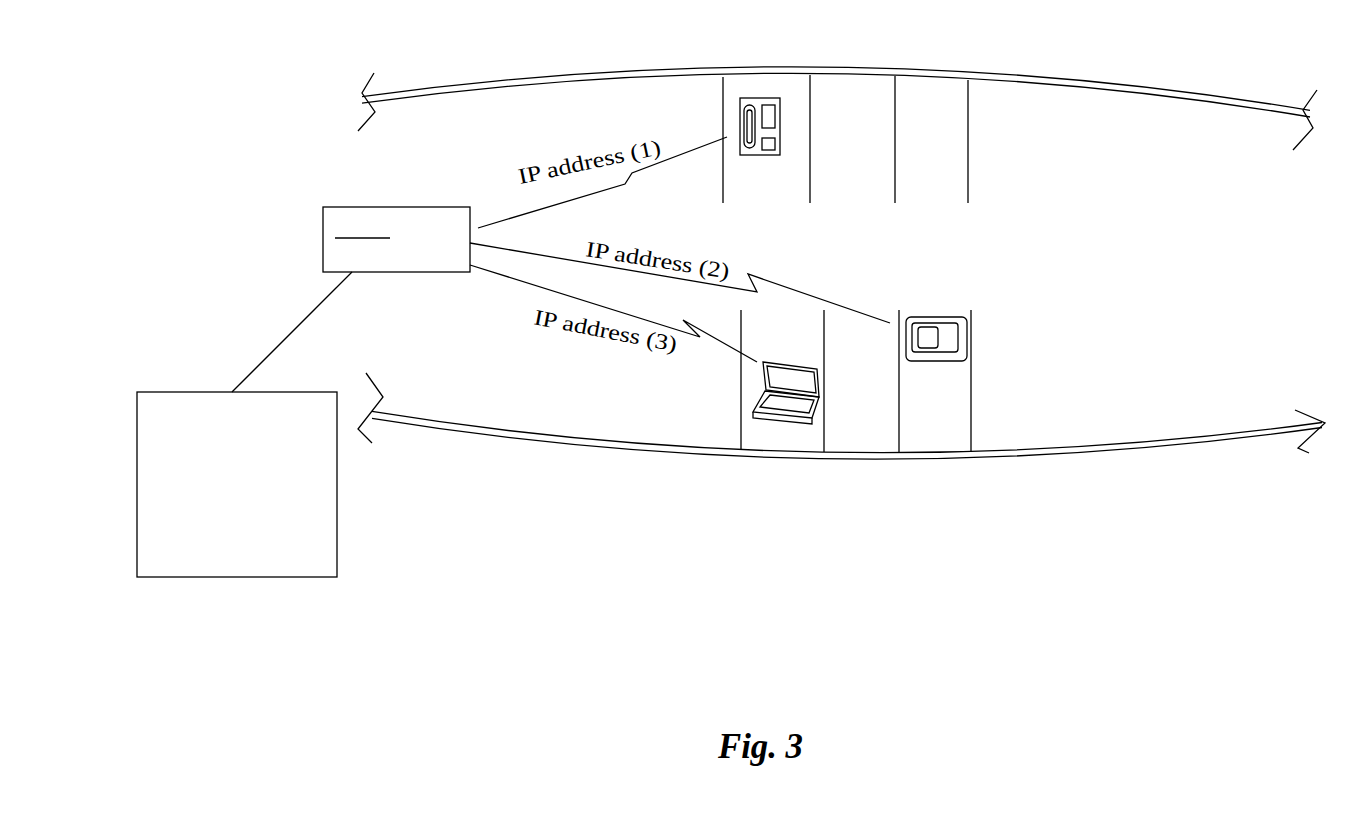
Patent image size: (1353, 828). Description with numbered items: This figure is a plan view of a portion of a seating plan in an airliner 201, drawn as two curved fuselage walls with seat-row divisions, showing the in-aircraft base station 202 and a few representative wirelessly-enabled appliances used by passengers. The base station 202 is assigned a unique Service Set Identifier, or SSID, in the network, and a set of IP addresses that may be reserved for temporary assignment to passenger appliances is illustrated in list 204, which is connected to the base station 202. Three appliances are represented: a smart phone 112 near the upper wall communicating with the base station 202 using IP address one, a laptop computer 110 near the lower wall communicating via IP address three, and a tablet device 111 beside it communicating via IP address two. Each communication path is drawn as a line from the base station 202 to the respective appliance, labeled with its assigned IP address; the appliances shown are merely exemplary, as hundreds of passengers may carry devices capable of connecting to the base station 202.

The airliner 201 is at (605, 69).
The in-aircraft base station 202 is at (372, 206).
The list of IP addresses 204 is at (205, 391).
The laptop computer 110 is at (788, 425).
The tablet device 111 is at (940, 362).
The smart phone 112 is at (758, 97).